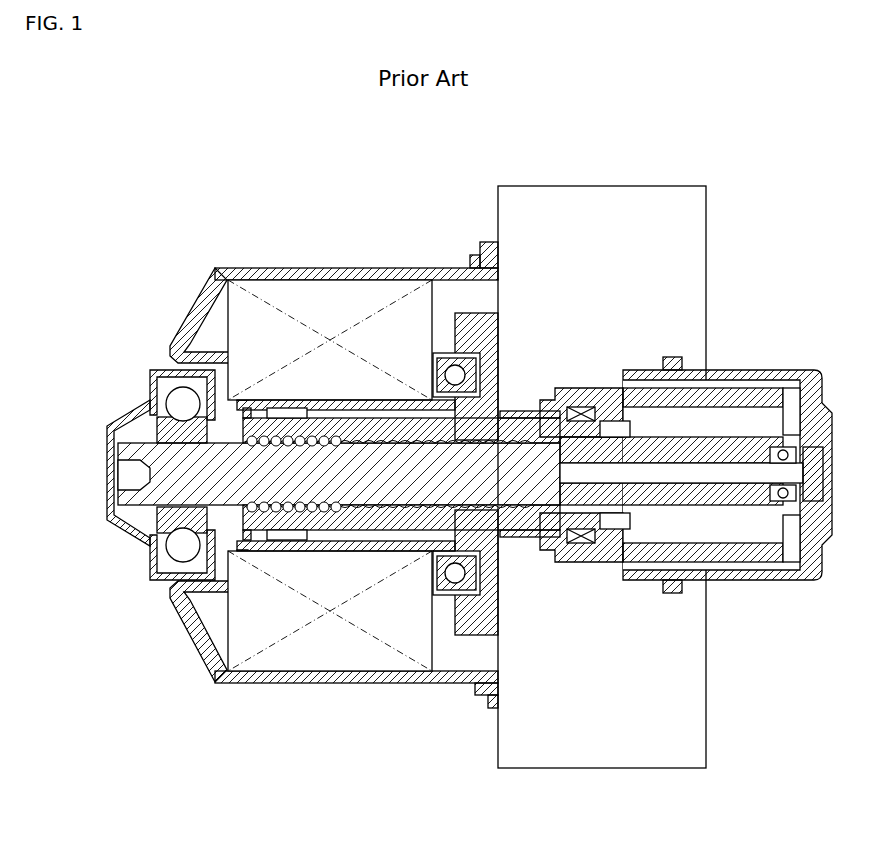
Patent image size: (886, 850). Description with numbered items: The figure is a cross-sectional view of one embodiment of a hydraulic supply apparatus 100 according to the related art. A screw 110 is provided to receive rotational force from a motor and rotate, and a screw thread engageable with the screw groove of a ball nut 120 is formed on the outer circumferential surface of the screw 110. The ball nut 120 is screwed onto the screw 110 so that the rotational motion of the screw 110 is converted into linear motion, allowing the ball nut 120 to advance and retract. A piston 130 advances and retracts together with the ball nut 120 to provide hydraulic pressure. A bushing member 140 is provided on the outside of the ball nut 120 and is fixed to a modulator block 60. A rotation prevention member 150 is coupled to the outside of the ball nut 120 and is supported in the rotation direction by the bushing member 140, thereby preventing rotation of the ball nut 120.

The hydraulic supply apparatus 100 is at (446, 120).
The screw 110 is at (137, 455).
The ball nut 120 is at (140, 414).
The piston 130 is at (510, 420).
The bushing member 140 is at (352, 403).
The rotation prevention member 150 is at (332, 425).
The modulator block 60 is at (600, 752).